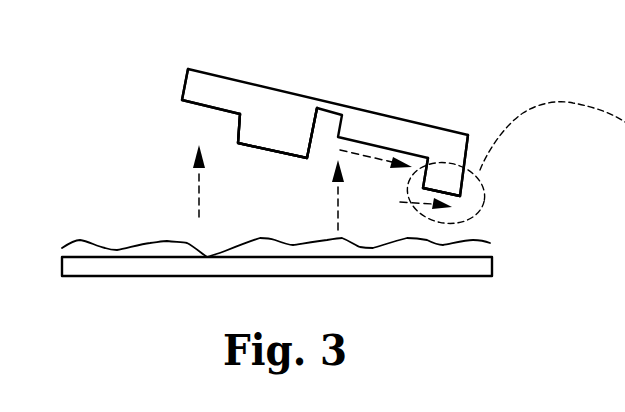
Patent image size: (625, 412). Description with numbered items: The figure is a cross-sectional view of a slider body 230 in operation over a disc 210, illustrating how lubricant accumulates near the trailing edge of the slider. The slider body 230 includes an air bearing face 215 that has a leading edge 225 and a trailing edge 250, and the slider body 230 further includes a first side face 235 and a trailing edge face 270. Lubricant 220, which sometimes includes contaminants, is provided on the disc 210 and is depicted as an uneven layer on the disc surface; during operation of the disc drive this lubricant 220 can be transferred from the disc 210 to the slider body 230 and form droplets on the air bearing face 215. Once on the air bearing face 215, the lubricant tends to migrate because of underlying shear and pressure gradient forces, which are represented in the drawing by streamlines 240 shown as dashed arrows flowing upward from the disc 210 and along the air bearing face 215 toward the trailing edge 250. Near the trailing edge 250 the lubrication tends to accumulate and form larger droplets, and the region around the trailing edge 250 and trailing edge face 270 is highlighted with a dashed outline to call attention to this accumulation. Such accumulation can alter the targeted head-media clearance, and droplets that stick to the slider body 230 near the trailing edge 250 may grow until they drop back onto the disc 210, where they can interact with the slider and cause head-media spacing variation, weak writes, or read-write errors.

The disc 210 is at (62, 270).
The air bearing face 215 is at (378, 147).
The lubricant 220 is at (117, 250).
The leading edge 225 is at (182, 100).
The slider body 230 is at (248, 87).
The first side face 235 is at (288, 126).
The streamlines 240 is at (199, 182).
The trailing edge 250 is at (465, 195).
The trailing edge face 270 is at (468, 152).